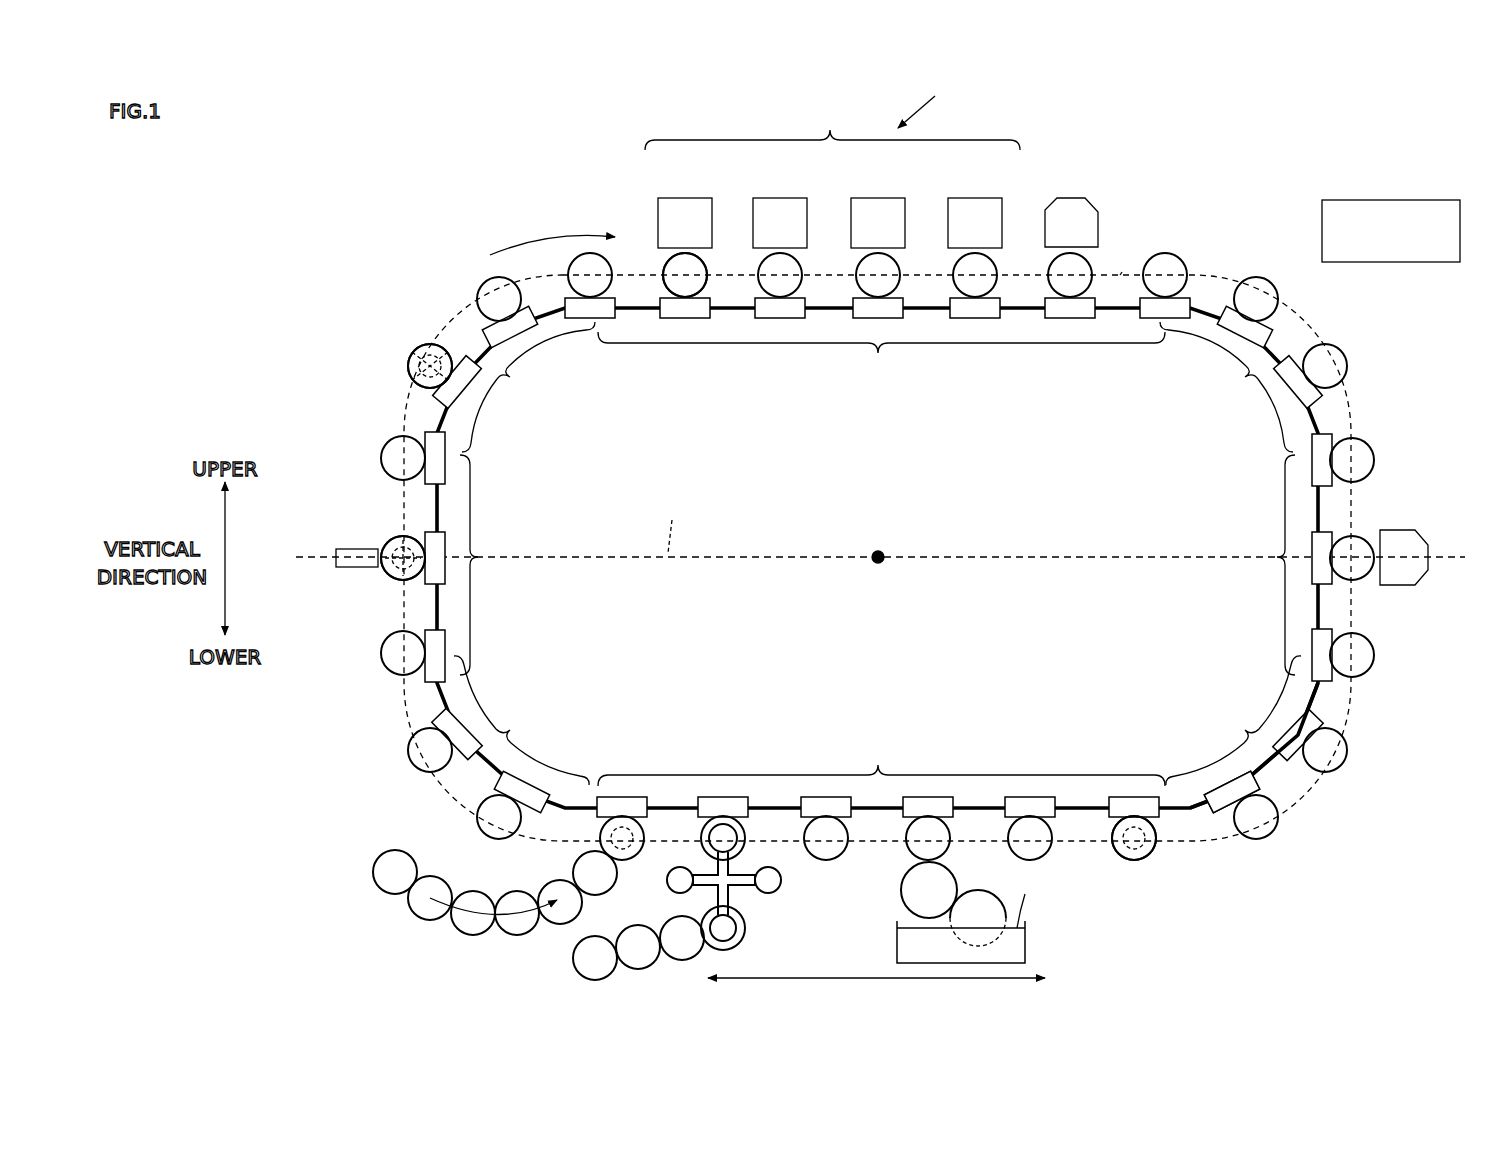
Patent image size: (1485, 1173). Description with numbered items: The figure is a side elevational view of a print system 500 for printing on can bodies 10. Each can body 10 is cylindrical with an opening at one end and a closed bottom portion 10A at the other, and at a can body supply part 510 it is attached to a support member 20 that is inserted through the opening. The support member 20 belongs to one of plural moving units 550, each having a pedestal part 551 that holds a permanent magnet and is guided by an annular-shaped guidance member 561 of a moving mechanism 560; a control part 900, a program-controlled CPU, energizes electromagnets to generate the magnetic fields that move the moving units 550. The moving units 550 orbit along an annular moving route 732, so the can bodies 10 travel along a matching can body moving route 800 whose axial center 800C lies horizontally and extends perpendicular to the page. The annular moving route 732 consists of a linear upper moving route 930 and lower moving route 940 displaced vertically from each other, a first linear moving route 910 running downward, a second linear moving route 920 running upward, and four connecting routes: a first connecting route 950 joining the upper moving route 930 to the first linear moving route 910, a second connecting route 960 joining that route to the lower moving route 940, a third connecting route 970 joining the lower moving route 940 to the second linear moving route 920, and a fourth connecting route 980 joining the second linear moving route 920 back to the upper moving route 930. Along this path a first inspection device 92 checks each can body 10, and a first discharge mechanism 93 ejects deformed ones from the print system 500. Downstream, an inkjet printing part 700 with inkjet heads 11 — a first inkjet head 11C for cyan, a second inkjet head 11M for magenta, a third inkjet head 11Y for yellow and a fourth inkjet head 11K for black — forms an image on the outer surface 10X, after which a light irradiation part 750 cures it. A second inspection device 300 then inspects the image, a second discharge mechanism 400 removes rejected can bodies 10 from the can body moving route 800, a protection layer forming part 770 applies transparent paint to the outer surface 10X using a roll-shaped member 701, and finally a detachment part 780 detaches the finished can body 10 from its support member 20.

The print system 500 is at (1290, 148).
The can body moving route 800 is at (877, 509).
The annular moving route 732 is at (1122, 270).
The axial center 800C is at (878, 550).
The can body 10 is at (422, 350).
The bottom portion 10A is at (438, 372).
The outer surface 10X is at (707, 285).
The support member 20 is at (420, 362).
The moving unit 550 is at (405, 391).
The pedestal part 551 is at (1135, 796).
The inkjet head 11 is at (830, 201).
The first inkjet head 11C is at (686, 198).
The second inkjet head 11M is at (781, 198).
The third inkjet head 11Y is at (879, 198).
The fourth inkjet head 11K is at (976, 198).
The inkjet printing part 700 is at (832, 111).
The light irradiation part 750 is at (1073, 188).
The second inspection device 300 is at (1421, 593).
The first inspection device 92 is at (338, 555).
The first discharge mechanism 93 is at (432, 342).
The control part 900 is at (1418, 200).
The can body supply part 510 is at (575, 850).
The detachment part 780 is at (748, 900).
The roll-shaped member 701 is at (900, 892).
The protection layer forming part 770 is at (1042, 932).
The second discharge mechanism 400 is at (1137, 866).
The moving mechanism 560 is at (1280, 777).
The guidance member 561 is at (1265, 775).
The second linear moving route 920 is at (492, 565).
The first linear moving route 910 is at (1264, 565).
The upper moving route 930 is at (881, 356).
The lower moving route 940 is at (881, 762).
The fourth connecting route 980 is at (528, 387).
The first connecting route 950 is at (1226, 387).
The second connecting route 960 is at (1233, 720).
The third connecting route 970 is at (521, 720).